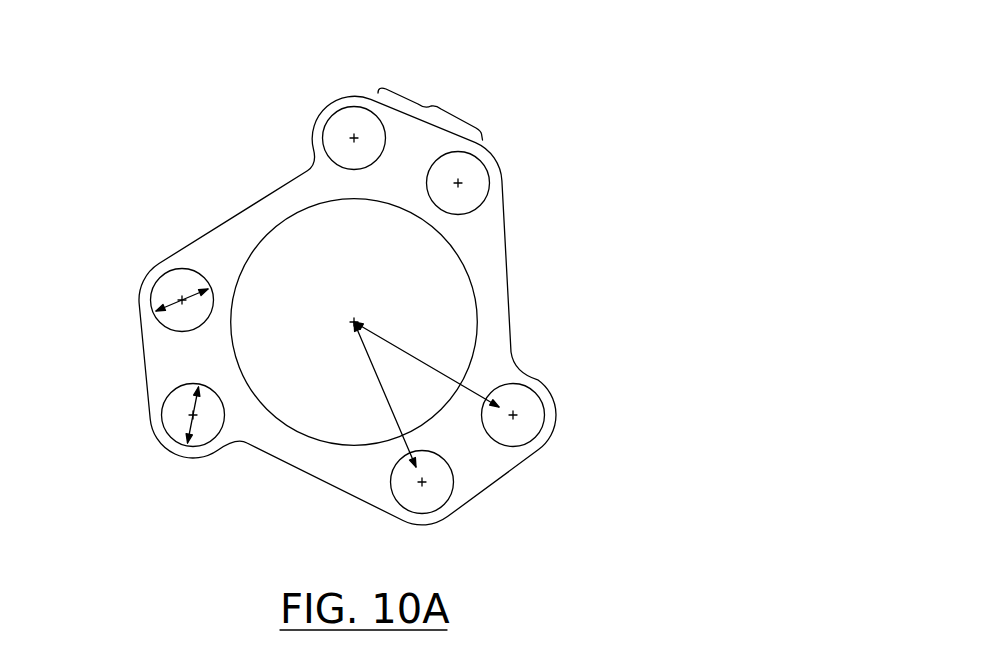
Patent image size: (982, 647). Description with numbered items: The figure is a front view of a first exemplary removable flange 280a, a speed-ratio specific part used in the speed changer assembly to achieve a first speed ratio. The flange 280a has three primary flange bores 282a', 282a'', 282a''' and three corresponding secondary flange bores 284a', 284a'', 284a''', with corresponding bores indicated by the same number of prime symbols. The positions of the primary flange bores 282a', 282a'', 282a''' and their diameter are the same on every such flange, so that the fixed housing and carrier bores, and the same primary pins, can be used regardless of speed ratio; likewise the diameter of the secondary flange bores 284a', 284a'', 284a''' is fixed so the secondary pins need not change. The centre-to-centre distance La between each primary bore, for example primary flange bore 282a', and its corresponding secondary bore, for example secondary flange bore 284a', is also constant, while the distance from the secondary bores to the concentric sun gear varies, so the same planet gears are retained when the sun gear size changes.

The removable flange 280a is at (542, 58).
The primary flange bore 282a' is at (307, 124).
The primary flange bore 282a'' is at (557, 403).
The primary flange bore 282a''' is at (134, 423).
The secondary flange bore 284a' is at (507, 199).
The secondary flange bore 284a'' is at (465, 499).
The secondary flange bore 284a''' is at (127, 278).
The centre-to-centre distance La is at (430, 106).